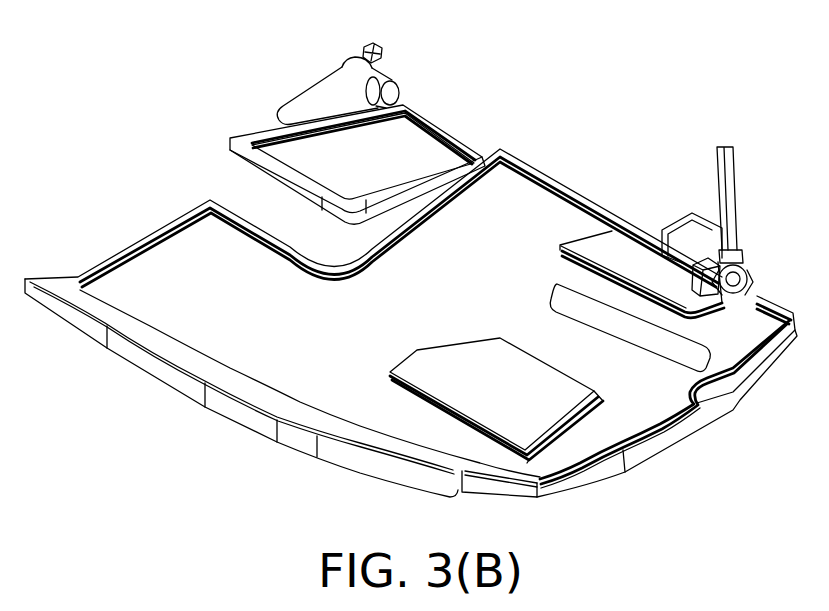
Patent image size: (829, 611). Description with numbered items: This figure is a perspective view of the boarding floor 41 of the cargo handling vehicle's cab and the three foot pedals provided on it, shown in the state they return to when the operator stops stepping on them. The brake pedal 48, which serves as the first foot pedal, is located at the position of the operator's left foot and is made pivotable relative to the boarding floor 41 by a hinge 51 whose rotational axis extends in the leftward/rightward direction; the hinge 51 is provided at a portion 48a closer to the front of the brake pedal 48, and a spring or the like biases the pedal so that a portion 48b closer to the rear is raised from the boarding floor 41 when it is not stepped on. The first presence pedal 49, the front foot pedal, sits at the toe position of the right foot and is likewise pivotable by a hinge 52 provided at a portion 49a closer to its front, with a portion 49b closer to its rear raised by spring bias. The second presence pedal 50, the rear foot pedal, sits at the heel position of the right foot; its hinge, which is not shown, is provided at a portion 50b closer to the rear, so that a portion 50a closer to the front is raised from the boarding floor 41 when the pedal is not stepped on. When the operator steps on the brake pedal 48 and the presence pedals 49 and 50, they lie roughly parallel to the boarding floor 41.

The boarding floor 41 is at (157, 278).
The brake pedal 48 is at (343, 153).
The portion closer to the front of the brake pedal 48a is at (412, 142).
The portion closer to the rear of the brake pedal 48b is at (313, 163).
The first presence pedal 49 is at (600, 243).
The portion closer to the front of the first presence pedal 49a is at (660, 228).
The portion closer to the rear of the first presence pedal 49b is at (630, 272).
The second presence pedal 50 is at (543, 410).
The portion closer to the front of the second presence pedal 50a is at (523, 366).
The portion closer to the rear of the second presence pedal 50b is at (465, 400).
The hinge 51 is at (348, 57).
The hinge 52 is at (747, 280).